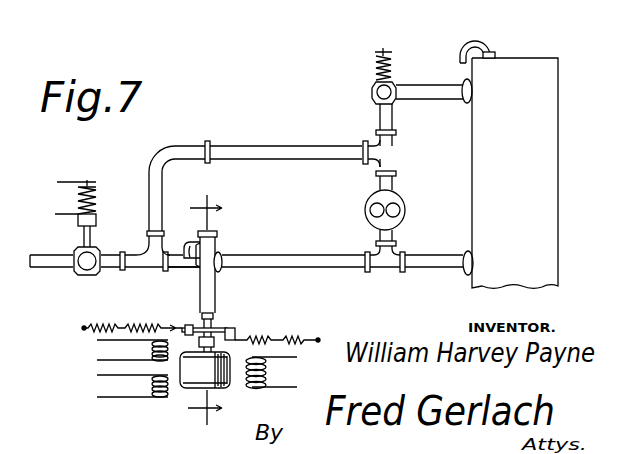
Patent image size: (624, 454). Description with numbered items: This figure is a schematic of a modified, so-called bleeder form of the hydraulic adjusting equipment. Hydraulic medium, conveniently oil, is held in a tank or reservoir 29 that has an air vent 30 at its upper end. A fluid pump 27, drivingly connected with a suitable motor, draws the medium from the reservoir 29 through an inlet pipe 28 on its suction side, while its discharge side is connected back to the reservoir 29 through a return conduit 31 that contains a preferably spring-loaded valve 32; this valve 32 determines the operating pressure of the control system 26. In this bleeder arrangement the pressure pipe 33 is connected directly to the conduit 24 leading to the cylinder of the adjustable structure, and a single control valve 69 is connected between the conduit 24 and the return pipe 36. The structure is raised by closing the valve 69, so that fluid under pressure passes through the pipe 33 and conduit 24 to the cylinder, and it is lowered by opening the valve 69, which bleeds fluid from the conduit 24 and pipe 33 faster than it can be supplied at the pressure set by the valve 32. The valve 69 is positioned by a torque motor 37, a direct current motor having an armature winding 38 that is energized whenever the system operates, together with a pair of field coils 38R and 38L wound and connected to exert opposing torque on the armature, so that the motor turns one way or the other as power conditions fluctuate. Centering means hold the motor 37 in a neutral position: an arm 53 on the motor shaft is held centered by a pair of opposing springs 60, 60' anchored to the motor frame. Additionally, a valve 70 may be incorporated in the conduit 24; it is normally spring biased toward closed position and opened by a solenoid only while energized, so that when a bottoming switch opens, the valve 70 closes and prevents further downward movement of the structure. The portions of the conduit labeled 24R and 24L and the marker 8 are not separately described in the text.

The section line indicator 8 is at (205, 310).
The conduit 24 is at (48, 253).
The right branch pipe 24R is at (152, 180).
The left branch pipe 24L is at (172, 267).
The control system 26 is at (77, 284).
The fluid pump 27 is at (393, 204).
The inlet pipe 28 is at (437, 267).
The tank or reservoir 29 is at (515, 173).
The air vent 30 is at (470, 40).
The return conduit 31 is at (440, 100).
The spring-loaded valve 32 is at (377, 77).
The pressure pipe 33 is at (292, 147).
The return pipe 36 is at (311, 274).
The torque motor 37 is at (205, 370).
The armature winding 38 is at (256, 390).
The field coil 38R is at (150, 352).
The field coil 38L is at (150, 389).
The arm 53 is at (223, 322).
The spring 60 is at (132, 315).
The spring 60' is at (277, 329).
The control valve 69 is at (222, 245).
The valve 70 is at (103, 223).